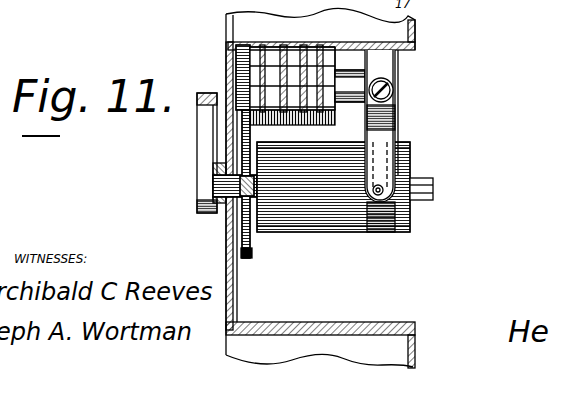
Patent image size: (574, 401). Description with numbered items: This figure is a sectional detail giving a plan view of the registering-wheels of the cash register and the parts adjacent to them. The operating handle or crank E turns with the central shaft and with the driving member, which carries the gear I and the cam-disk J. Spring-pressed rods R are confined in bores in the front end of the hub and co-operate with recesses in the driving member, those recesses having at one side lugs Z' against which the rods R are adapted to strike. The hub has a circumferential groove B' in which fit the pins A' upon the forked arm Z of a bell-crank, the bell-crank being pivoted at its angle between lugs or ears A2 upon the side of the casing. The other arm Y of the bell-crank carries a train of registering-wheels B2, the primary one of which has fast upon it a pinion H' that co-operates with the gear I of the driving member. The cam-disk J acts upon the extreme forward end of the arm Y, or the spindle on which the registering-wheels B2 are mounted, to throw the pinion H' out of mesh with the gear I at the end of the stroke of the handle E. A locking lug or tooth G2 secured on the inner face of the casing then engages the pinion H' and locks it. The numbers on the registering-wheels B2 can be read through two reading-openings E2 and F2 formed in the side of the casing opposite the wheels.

The pinion H' is at (303, 188).
The operating handle or crank E is at (204, 137).
The spring-pressed rods R is at (252, 187).
The gear of the driving member I is at (248, 162).
The lugs Z' is at (266, 182).
The cam-disk J is at (250, 259).
The locking lug or tooth G2 is at (243, 45).
The reading-opening E2 is at (262, 47).
The reading-opening F2 is at (310, 47).
The registering-wheels B2 is at (290, 118).
The arm of the bell-crank Y is at (355, 100).
The pins A' is at (345, 187).
The lugs or ears A2 is at (390, 62).
The forked arm of the bell-crank Z is at (399, 117).
The circumferential groove B' is at (381, 231).